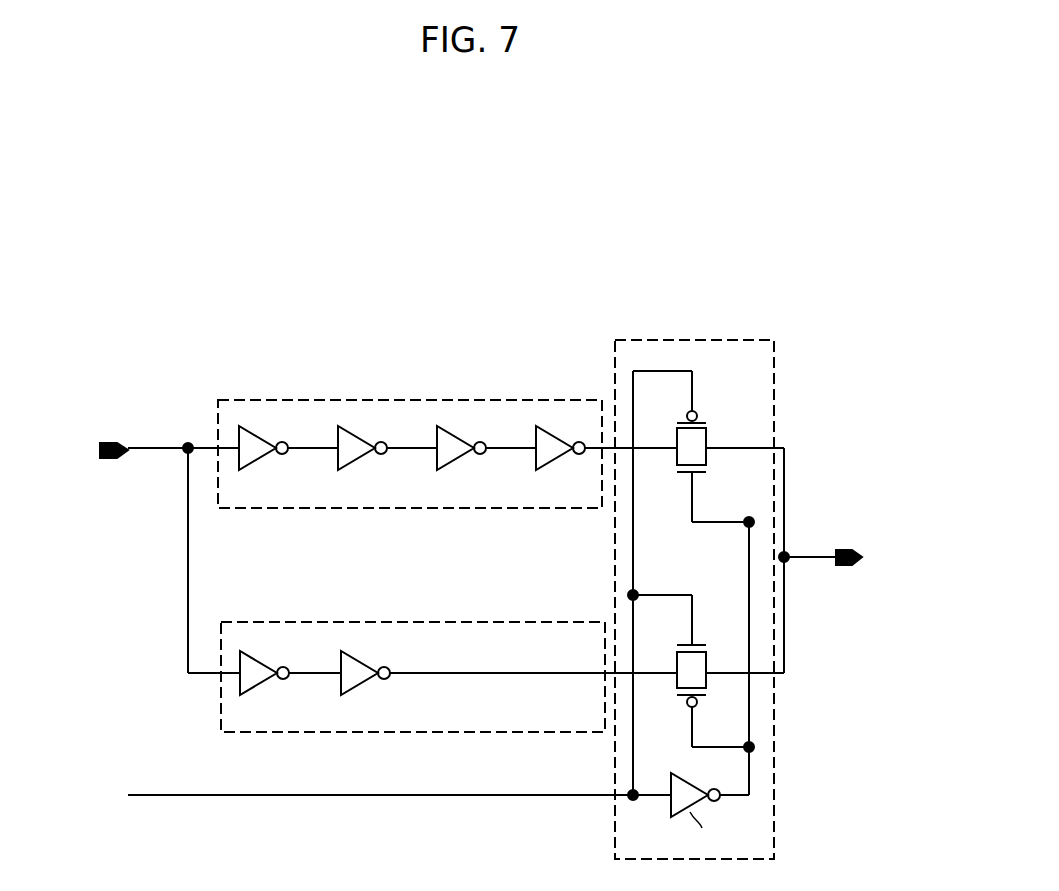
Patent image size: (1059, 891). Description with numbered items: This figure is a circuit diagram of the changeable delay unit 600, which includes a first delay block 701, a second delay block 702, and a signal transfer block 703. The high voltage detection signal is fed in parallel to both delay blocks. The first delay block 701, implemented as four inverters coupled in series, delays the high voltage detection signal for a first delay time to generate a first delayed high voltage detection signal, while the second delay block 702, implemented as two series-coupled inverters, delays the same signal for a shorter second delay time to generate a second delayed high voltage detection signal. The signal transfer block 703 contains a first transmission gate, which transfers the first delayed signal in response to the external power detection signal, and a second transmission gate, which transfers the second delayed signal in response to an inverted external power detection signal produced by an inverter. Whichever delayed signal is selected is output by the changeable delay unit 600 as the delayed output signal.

The changeable delay unit 600 is at (741, 206).
The first delay block 701 is at (433, 399).
The second delay block 702 is at (435, 622).
The signal transfer block 703 is at (733, 340).